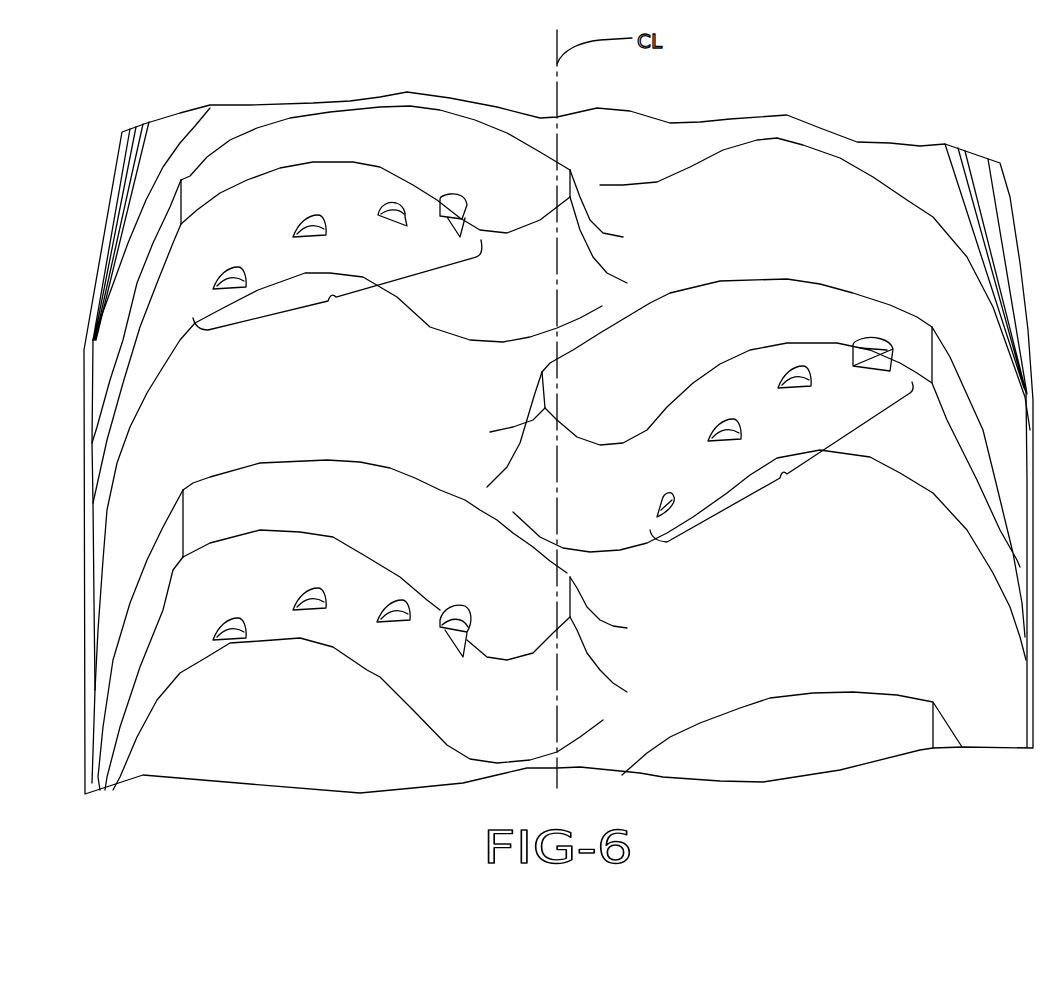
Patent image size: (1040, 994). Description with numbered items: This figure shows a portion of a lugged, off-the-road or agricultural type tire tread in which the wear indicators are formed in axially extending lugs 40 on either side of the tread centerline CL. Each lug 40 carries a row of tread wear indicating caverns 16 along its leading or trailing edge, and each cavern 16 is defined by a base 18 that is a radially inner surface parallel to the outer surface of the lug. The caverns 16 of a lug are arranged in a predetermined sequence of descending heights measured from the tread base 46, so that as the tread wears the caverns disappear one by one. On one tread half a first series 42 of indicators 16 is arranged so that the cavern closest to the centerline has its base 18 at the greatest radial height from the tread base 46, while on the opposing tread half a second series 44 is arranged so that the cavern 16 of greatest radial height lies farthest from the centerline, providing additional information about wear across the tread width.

The tread wear indicating cavern 16 is at (390, 213).
The cavern base 18 is at (453, 224).
The axially extending lug 40 is at (260, 496).
The first series 42 is at (337, 291).
The second series 44 is at (781, 462).
The tread base 46 is at (347, 412).